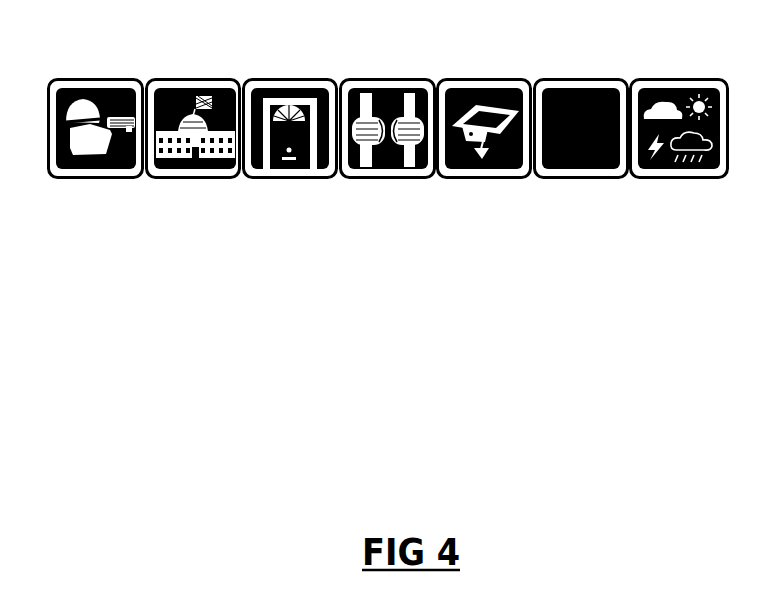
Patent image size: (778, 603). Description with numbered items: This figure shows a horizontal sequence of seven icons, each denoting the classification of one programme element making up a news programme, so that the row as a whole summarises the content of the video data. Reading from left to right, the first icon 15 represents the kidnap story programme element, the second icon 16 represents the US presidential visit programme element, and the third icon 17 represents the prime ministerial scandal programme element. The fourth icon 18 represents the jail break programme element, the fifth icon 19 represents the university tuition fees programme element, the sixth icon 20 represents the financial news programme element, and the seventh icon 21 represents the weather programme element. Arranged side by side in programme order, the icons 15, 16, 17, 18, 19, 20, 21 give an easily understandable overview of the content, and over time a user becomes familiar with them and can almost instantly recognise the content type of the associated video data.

The first icon 15 is at (78, 77).
The second icon 16 is at (193, 78).
The third icon 17 is at (306, 78).
The fourth icon 18 is at (377, 78).
The fifth icon 19 is at (496, 78).
The sixth icon 20 is at (595, 78).
The seventh icon 21 is at (729, 80).